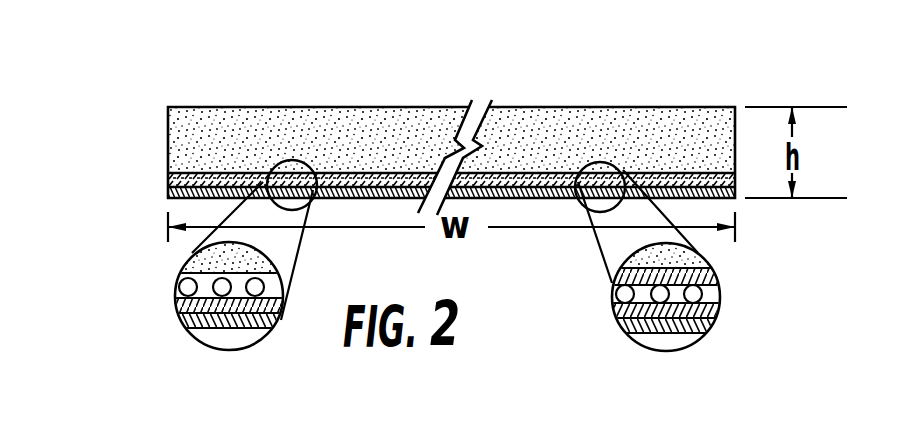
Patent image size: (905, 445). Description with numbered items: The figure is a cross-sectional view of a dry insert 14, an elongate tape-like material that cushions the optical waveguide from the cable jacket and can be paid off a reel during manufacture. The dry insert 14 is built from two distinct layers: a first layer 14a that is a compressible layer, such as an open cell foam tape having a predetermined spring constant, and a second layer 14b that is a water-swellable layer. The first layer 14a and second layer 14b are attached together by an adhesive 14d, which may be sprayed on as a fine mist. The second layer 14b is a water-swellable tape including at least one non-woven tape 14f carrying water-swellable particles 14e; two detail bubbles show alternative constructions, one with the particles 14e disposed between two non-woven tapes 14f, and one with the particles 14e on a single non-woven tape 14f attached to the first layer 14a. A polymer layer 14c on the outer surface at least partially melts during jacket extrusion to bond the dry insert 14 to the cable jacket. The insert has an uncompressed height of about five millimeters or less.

The dry insert 14 is at (458, 210).
The first layer 14a is at (188, 148).
The second layer 14b is at (167, 178).
The polymer layer 14c is at (168, 193).
The adhesive 14d is at (197, 290).
The water-swellable particles 14e is at (267, 285).
The non-woven tape 14f is at (187, 315).